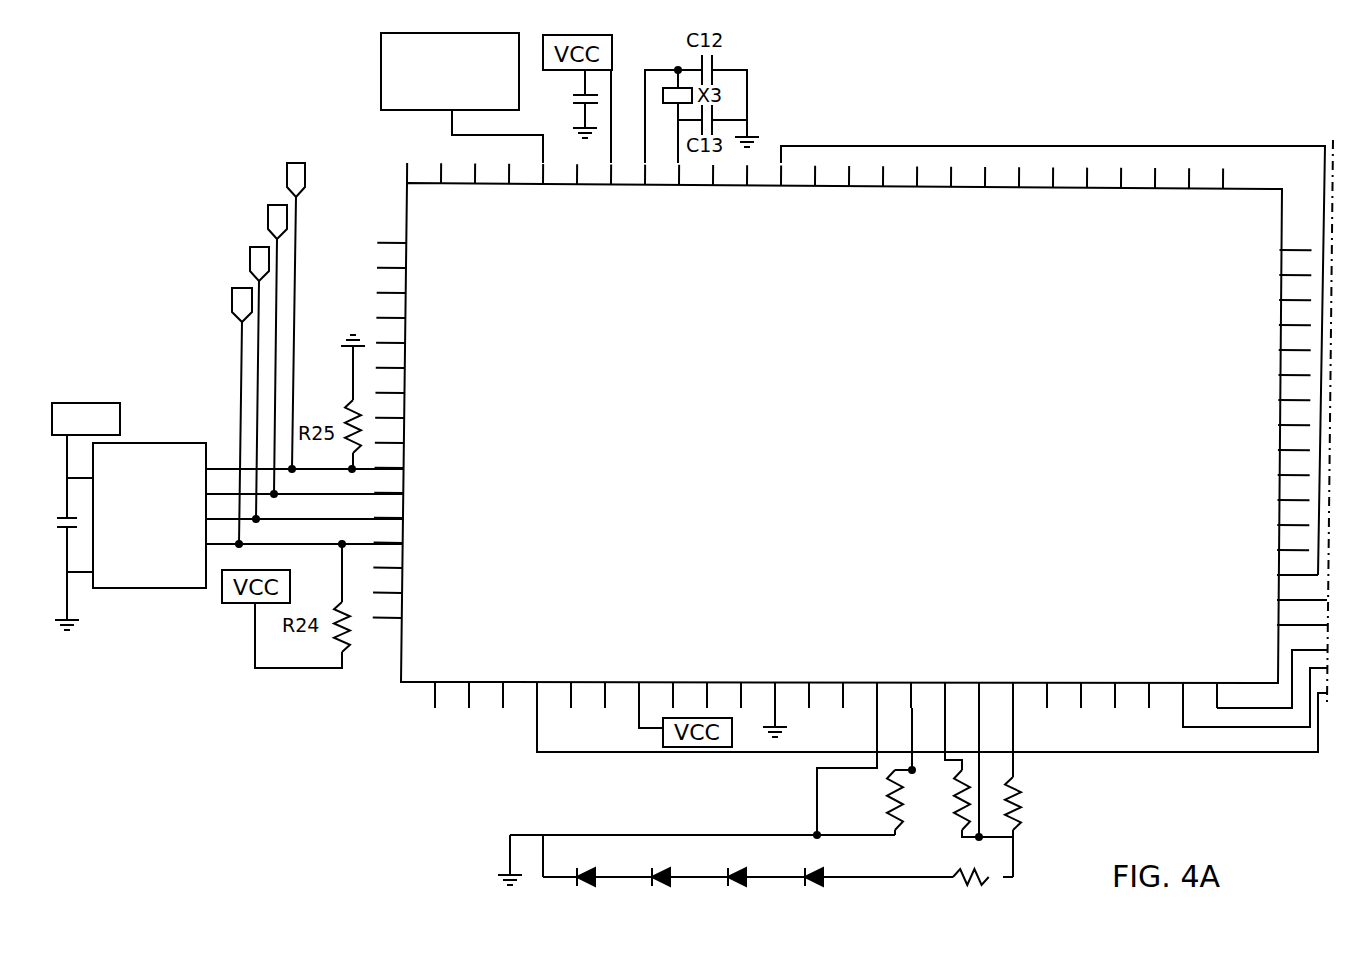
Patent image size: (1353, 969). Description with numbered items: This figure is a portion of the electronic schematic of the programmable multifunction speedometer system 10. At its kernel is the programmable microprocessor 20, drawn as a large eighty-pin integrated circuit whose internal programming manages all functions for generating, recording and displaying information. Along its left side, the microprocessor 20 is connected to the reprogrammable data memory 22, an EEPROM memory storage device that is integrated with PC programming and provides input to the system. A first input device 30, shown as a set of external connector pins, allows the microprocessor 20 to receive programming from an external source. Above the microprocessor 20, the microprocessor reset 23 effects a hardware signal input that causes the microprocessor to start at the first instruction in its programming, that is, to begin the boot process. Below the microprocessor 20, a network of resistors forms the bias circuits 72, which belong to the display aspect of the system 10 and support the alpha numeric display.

The programmable multifunction speedometer system 10 is at (932, 107).
The programmable microprocessor 20 is at (407, 200).
The reprogrammable data memory 22 is at (77, 583).
The microprocessor reset 23 is at (381, 75).
The first input device 30 is at (232, 311).
The bias circuits 72 is at (1013, 860).